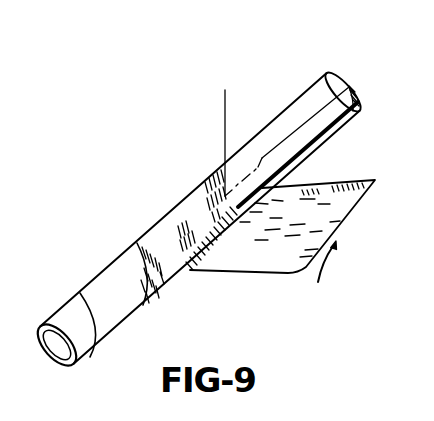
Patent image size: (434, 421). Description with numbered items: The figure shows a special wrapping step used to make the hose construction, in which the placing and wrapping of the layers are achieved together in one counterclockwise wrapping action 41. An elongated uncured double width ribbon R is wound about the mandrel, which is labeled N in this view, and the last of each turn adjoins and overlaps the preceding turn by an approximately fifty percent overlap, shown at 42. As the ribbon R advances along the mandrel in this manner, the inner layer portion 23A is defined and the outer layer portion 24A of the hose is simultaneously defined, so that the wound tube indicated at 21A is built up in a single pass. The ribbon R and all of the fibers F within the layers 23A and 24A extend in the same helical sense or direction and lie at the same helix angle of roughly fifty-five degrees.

The tubular member 21A is at (385, 58).
The inner layer portion 23A is at (190, 196).
The outer layer portion 24A is at (118, 328).
The counterclockwise wrapping action 41 is at (328, 262).
The overlap of adjoining turns 42 is at (254, 229).
The fibers F is at (294, 190).
The elongated uncured double width ribbon R is at (254, 276).
The tube surface line N is at (317, 91).